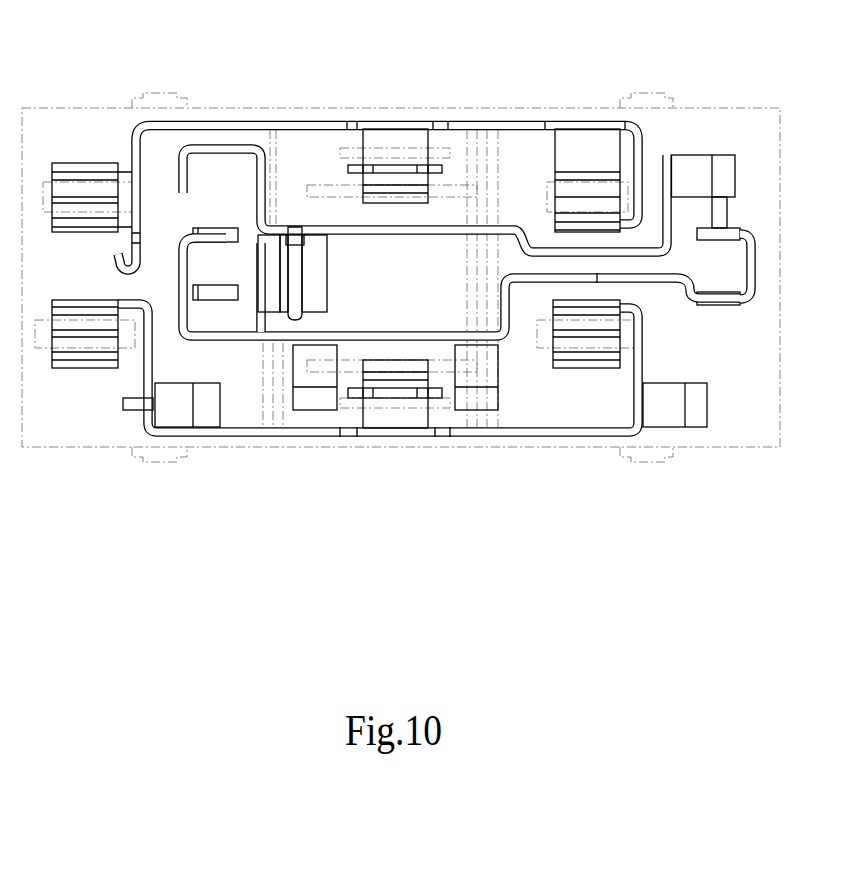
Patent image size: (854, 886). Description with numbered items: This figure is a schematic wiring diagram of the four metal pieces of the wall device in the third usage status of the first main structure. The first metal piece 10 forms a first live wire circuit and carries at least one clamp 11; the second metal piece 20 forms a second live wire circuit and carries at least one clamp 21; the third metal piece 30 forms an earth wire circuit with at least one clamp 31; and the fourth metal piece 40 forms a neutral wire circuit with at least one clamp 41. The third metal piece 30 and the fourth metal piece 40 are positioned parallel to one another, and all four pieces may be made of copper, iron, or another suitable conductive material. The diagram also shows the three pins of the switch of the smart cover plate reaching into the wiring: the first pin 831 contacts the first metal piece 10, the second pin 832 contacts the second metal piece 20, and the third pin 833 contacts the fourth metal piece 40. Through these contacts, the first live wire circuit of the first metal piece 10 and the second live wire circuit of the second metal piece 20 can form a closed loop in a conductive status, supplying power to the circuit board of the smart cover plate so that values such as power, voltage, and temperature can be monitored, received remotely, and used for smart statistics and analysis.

The first metal piece 10 is at (312, 121).
The clamp 11 is at (90, 172).
The second metal piece 20 is at (458, 232).
The clamp 21 is at (288, 227).
The third metal piece 30 is at (238, 337).
The clamp 31 is at (220, 233).
The fourth metal piece 40 is at (519, 433).
The clamp 41 is at (85, 356).
The first pin 831 is at (395, 172).
The second pin 832 is at (395, 398).
The third pin 833 is at (291, 282).